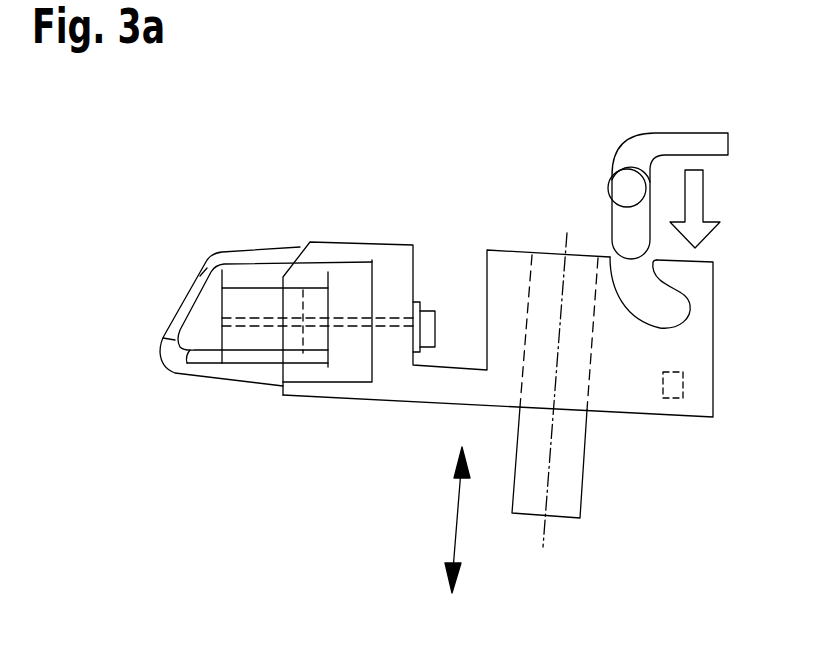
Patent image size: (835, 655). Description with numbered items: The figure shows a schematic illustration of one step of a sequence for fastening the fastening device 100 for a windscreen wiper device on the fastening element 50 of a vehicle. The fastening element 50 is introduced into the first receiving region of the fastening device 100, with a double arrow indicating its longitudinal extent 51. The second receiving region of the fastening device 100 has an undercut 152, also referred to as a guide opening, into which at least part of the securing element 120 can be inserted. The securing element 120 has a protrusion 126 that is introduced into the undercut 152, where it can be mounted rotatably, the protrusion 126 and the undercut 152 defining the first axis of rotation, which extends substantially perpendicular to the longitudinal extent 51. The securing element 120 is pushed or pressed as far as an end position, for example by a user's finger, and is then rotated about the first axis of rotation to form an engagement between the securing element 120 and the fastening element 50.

The fastening device 100 is at (405, 158).
The securing element 120 is at (717, 113).
The protrusion 126 is at (620, 185).
The undercut 152 is at (678, 308).
The fastening element 50 is at (568, 467).
The longitudinal extent 51 is at (457, 518).